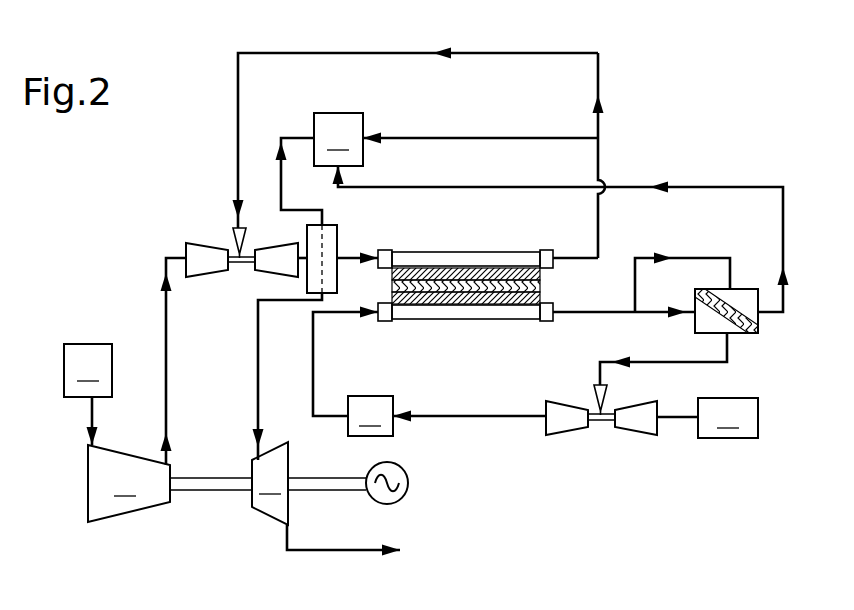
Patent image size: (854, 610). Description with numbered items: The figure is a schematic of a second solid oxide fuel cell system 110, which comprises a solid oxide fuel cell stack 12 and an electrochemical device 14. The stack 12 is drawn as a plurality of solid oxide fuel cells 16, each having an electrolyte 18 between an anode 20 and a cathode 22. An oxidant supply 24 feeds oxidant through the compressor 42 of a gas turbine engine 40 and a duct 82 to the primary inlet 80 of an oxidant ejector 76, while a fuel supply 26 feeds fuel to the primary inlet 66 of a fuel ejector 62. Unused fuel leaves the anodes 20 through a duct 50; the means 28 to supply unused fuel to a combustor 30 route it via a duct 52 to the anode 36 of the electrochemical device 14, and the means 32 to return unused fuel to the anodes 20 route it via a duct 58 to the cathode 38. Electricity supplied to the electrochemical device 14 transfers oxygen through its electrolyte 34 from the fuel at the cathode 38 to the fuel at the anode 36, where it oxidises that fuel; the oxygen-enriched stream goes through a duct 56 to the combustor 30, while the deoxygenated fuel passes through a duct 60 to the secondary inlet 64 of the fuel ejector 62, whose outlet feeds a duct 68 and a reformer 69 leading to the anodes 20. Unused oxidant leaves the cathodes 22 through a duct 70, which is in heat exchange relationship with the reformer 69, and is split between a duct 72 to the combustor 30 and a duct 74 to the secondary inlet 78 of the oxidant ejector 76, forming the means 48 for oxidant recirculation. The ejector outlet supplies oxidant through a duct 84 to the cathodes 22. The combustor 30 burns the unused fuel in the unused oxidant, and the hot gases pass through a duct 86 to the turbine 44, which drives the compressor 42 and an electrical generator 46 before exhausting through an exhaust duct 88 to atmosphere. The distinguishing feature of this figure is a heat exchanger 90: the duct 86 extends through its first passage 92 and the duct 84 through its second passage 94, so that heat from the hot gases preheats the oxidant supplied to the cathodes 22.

The solid oxide fuel cell system 110 is at (714, 109).
The solid oxide fuel cell stack 12 is at (530, 248).
The electrochemical device 14 is at (768, 335).
The solid oxide fuel cell 16 is at (455, 268).
The electrolyte 18 is at (392, 287).
The anode 20 is at (432, 300).
The cathode 22 is at (505, 270).
The oxidant supply 24 is at (88, 394).
The fuel supply 26 is at (728, 418).
The means to supply unused fuel to combustor 28 is at (737, 182).
The combustor 30 is at (338, 139).
The means to supply unused fuel back to anodes 32 is at (738, 372).
The electrolyte 34 is at (700, 290).
The anode 36 is at (770, 312).
The cathode 38 is at (740, 334).
The gas turbine engine 40 is at (210, 515).
The compressor 42 is at (129, 483).
The turbine 44 is at (287, 409).
The electrical generator 46 is at (405, 497).
The means to supply unused oxidant back to cathodes 48 is at (607, 79).
The duct 50 is at (610, 312).
The duct 52 is at (704, 258).
The duct 56 is at (782, 250).
The duct 58 is at (656, 315).
The duct 60 is at (672, 362).
The fuel ejector 62 is at (566, 438).
The secondary inlet 64 is at (590, 400).
The primary inlet 66 is at (630, 422).
The duct 68 is at (443, 412).
The reformer 69 is at (353, 372).
The duct 70 is at (600, 246).
The duct 72 is at (535, 137).
The duct 74 is at (500, 52).
The oxidant ejector 76 is at (195, 235).
The secondary inlet 78 is at (232, 225).
The primary inlet 80 is at (203, 262).
The duct 82 is at (165, 338).
The duct 84 is at (343, 255).
The duct 86 is at (298, 136).
The exhaust duct 88 is at (316, 554).
The heat exchanger 90 is at (330, 222).
The first passage 92 is at (318, 289).
The second passage 94 is at (315, 258).